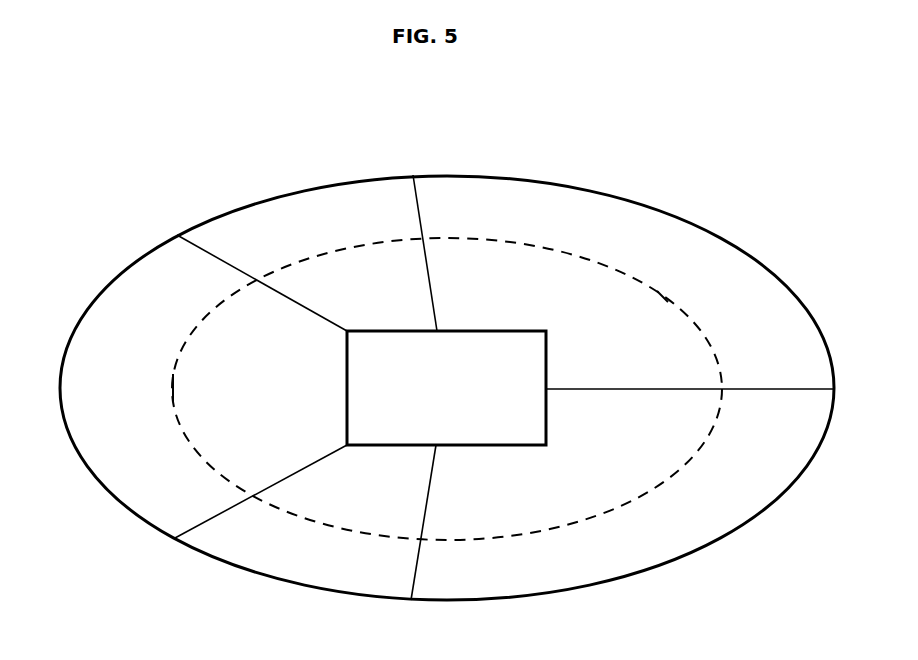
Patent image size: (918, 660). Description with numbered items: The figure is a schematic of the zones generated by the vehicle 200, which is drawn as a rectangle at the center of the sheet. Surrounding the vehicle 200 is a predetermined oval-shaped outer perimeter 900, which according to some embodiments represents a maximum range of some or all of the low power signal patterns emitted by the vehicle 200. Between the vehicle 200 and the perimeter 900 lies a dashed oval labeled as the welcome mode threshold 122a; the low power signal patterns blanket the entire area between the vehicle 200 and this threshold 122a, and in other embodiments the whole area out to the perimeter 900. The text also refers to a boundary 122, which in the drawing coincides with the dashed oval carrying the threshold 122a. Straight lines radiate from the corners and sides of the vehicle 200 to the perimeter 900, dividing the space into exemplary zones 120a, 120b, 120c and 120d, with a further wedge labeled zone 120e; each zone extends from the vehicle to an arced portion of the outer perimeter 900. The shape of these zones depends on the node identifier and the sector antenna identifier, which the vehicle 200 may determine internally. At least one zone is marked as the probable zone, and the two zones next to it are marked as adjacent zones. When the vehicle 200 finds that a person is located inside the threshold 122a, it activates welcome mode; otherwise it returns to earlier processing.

The outer perimeter 900 is at (812, 316).
The vehicle 200 is at (515, 446).
The inner boundary 122 is at (618, 482).
The welcome mode threshold 122a is at (172, 386).
The zone 120a is at (641, 180).
The zone 120b is at (269, 178).
The zone 120c is at (102, 259).
The zone 120d is at (262, 593).
The fifth sensing region 120e is at (641, 592).